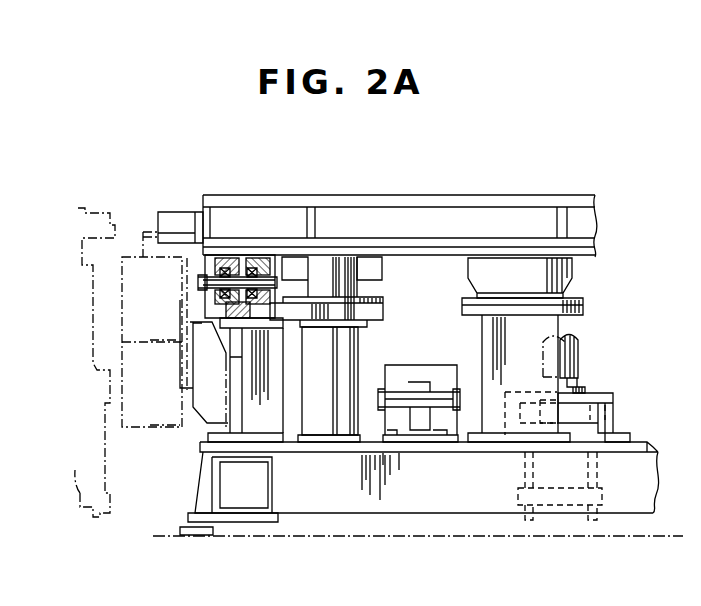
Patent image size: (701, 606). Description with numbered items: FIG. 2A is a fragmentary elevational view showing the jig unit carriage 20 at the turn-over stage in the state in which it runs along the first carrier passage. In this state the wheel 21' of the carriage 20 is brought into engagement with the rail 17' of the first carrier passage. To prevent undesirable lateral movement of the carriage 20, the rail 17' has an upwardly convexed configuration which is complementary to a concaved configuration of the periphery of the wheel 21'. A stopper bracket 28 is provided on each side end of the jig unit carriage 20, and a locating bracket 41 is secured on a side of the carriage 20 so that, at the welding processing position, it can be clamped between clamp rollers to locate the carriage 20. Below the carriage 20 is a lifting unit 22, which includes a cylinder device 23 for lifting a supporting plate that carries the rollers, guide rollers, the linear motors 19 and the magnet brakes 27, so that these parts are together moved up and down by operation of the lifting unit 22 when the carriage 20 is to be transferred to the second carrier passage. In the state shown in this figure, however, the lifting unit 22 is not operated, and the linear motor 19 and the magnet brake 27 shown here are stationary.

The rail 17' is at (185, 363).
The linear motor 19 is at (383, 266).
The jig unit carriage 20 is at (449, 195).
The wheel 21' is at (247, 239).
The lifting unit 22 is at (503, 485).
The cylinder device 23 is at (597, 453).
The magnet brake 27 is at (512, 263).
The stopper bracket 28 is at (178, 213).
The locating bracket 41 is at (333, 287).